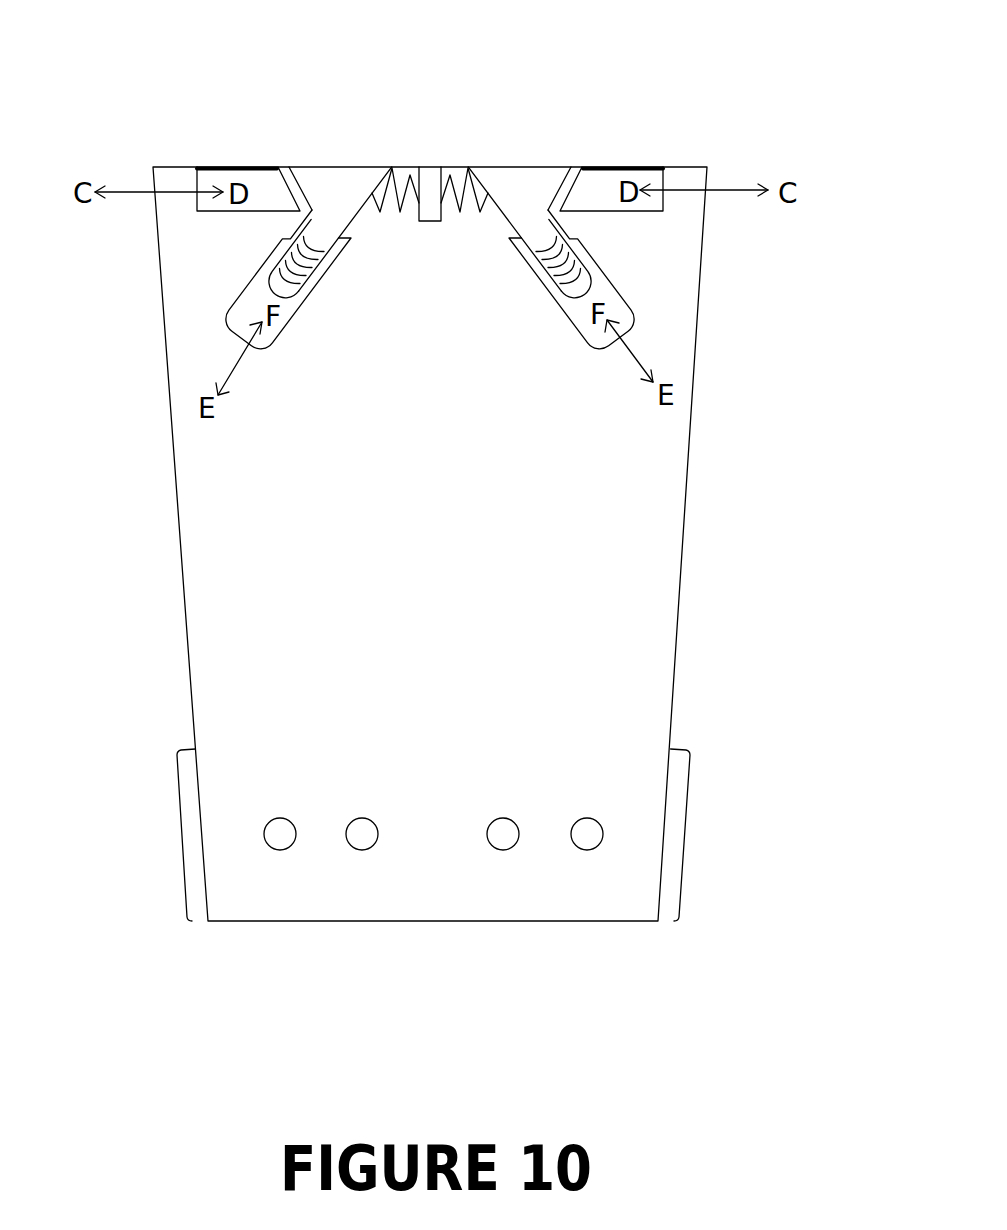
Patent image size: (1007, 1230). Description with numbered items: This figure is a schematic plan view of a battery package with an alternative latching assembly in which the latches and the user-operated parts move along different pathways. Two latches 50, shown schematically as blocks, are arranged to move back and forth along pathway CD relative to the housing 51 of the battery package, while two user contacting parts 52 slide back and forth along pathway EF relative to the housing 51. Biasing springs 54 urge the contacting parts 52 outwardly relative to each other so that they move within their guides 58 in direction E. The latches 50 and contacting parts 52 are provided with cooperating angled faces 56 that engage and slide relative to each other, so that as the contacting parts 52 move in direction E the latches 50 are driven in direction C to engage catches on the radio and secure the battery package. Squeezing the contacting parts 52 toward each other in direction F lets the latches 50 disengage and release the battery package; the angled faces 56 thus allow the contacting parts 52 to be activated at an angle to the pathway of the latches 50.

The latch 50 is at (218, 176).
The housing 51 is at (675, 670).
The user contacting part 52 is at (335, 186).
The biasing spring 54 is at (452, 180).
The angled face 56 is at (281, 167).
The guide 58 is at (287, 332).